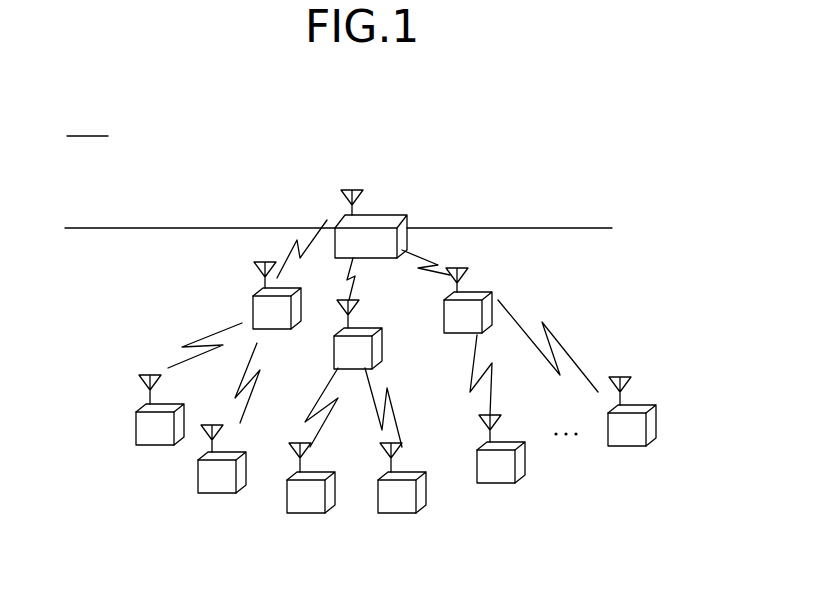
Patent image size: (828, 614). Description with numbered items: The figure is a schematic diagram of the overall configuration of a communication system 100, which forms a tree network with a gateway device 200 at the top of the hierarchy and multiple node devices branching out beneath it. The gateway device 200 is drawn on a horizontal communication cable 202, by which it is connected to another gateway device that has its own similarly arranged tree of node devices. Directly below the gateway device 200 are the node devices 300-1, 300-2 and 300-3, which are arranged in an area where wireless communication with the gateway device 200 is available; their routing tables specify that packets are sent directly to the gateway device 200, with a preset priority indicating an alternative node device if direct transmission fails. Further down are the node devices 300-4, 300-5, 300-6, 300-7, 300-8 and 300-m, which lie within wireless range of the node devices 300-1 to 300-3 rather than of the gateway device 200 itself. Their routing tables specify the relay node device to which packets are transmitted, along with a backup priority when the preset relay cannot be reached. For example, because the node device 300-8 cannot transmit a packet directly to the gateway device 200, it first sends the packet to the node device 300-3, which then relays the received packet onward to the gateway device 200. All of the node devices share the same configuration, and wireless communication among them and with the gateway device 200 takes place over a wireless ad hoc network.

The communication system 100 is at (90, 125).
The gateway device 200 is at (390, 222).
The communication cable 202 is at (558, 228).
The node device 300-1 is at (252, 301).
The node device 300-2 is at (382, 345).
The node device 300-3 is at (485, 293).
The node device 300-4 is at (136, 420).
The node device 300-5 is at (217, 494).
The node device 300-6 is at (313, 514).
The node device 300-7 is at (405, 514).
The node device 300-8 is at (500, 483).
The node device 300-m is at (648, 406).